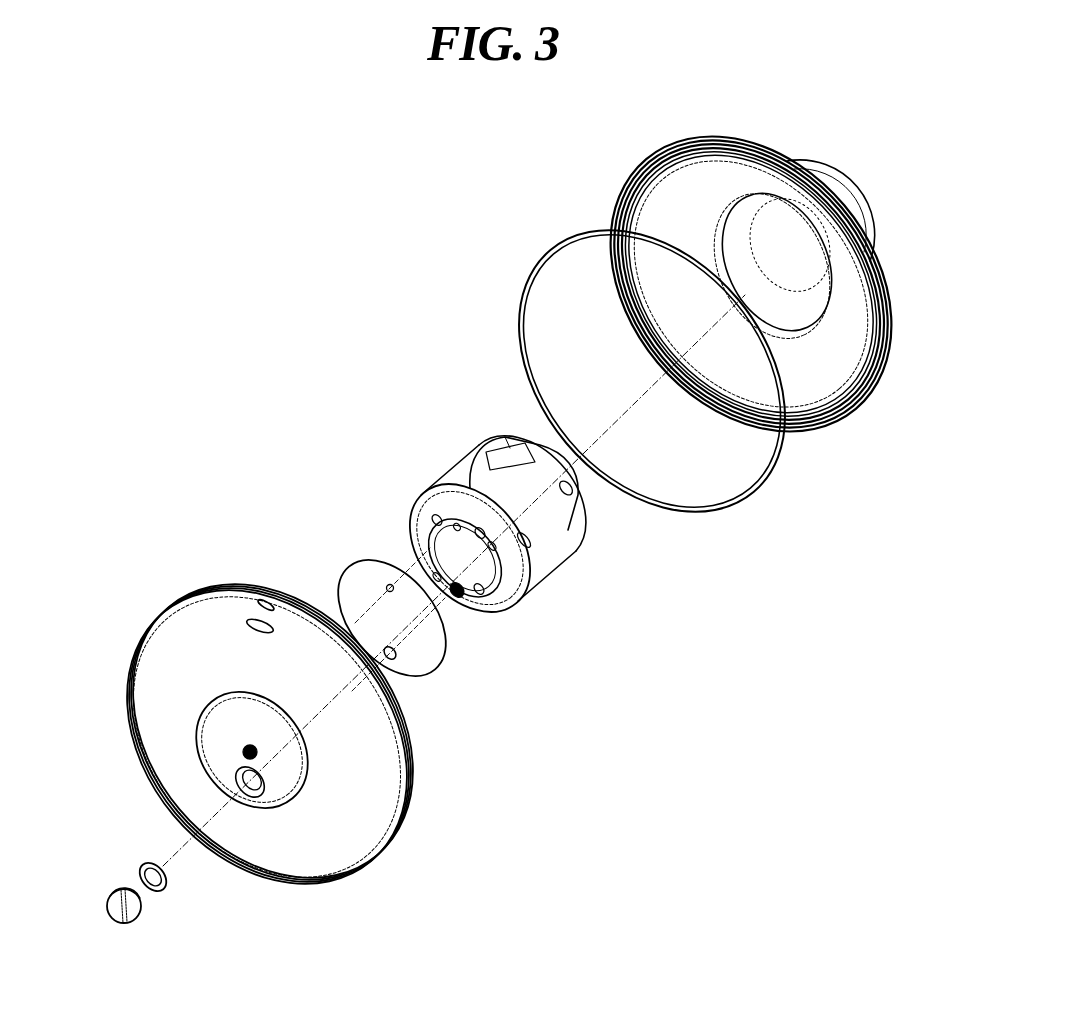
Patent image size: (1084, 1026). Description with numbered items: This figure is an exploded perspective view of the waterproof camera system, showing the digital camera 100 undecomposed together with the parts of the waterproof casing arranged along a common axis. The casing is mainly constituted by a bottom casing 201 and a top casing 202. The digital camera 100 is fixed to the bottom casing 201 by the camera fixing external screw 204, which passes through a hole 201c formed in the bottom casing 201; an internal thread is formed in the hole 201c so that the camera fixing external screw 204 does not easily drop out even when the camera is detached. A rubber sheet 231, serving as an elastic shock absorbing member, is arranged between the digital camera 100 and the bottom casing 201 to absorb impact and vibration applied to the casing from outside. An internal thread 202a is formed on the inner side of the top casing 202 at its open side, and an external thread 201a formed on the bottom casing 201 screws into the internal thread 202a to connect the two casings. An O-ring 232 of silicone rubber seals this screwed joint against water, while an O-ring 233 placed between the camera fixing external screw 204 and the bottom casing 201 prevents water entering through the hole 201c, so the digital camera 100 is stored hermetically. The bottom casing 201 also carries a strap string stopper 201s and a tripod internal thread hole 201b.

The digital camera 100 is at (487, 455).
The bottom casing 201 is at (360, 795).
The external thread 201a is at (392, 702).
The tripod internal thread hole 201b is at (247, 746).
The hole 201c is at (268, 798).
The strap string stopper 201s is at (268, 600).
The top casing 202 is at (658, 195).
The internal thread 202a is at (738, 412).
The rubber sheet 231 is at (360, 592).
The O-ring 232 is at (527, 320).
The O-ring 233 is at (167, 876).
The camera fixing external screw 204 is at (145, 906).